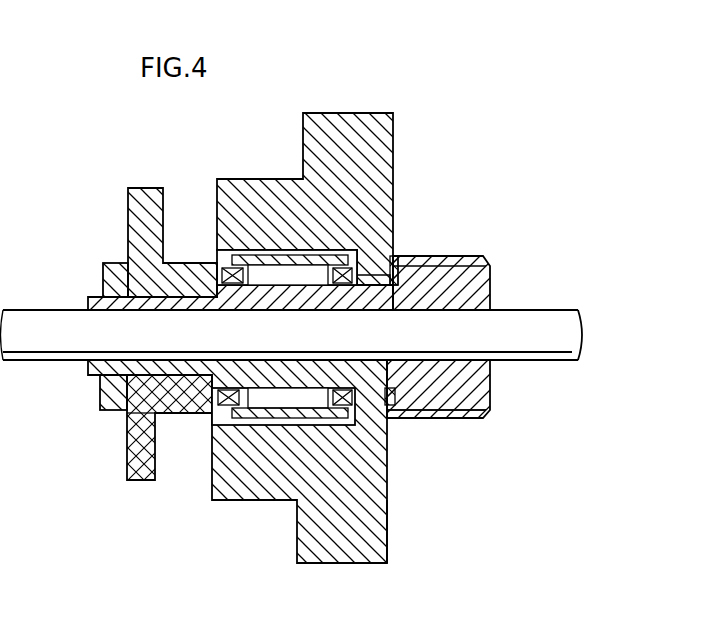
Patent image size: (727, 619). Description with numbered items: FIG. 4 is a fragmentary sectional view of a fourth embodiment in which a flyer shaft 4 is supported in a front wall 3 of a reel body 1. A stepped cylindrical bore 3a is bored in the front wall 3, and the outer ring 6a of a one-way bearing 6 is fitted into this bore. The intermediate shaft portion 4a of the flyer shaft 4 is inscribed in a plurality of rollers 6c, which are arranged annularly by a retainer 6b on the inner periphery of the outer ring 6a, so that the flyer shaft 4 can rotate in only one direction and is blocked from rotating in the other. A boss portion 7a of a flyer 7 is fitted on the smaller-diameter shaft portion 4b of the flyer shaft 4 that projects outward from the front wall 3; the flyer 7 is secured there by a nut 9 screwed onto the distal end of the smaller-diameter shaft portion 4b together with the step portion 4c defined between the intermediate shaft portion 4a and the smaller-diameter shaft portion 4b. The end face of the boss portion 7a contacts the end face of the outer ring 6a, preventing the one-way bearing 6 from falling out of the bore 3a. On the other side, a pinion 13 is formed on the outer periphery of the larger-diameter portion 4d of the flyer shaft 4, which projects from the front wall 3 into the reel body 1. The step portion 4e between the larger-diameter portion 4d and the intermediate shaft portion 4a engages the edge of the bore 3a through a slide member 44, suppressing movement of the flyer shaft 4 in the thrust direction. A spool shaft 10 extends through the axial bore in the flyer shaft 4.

The reel body 1 is at (333, 112).
The front wall 3 is at (385, 146).
The stepped cylindrical bore 3a is at (297, 262).
The flyer shaft 4 is at (495, 372).
The intermediate shaft portion 4a is at (387, 518).
The smaller-diameter shaft portion 4b is at (130, 415).
The step portion 4c is at (150, 428).
The larger-diameter portion 4d is at (470, 400).
The step portion 4e is at (395, 260).
The one-way bearing 6 is at (204, 413).
The outer ring 6a is at (265, 400).
The retainer 6b is at (236, 272).
The rollers 6c is at (262, 266).
The flyer 7 is at (128, 196).
The boss portion 7a is at (188, 262).
The nut 9 is at (103, 275).
The spool shaft 10 is at (541, 318).
The pinion 13 is at (480, 256).
The slide member 44 is at (393, 408).